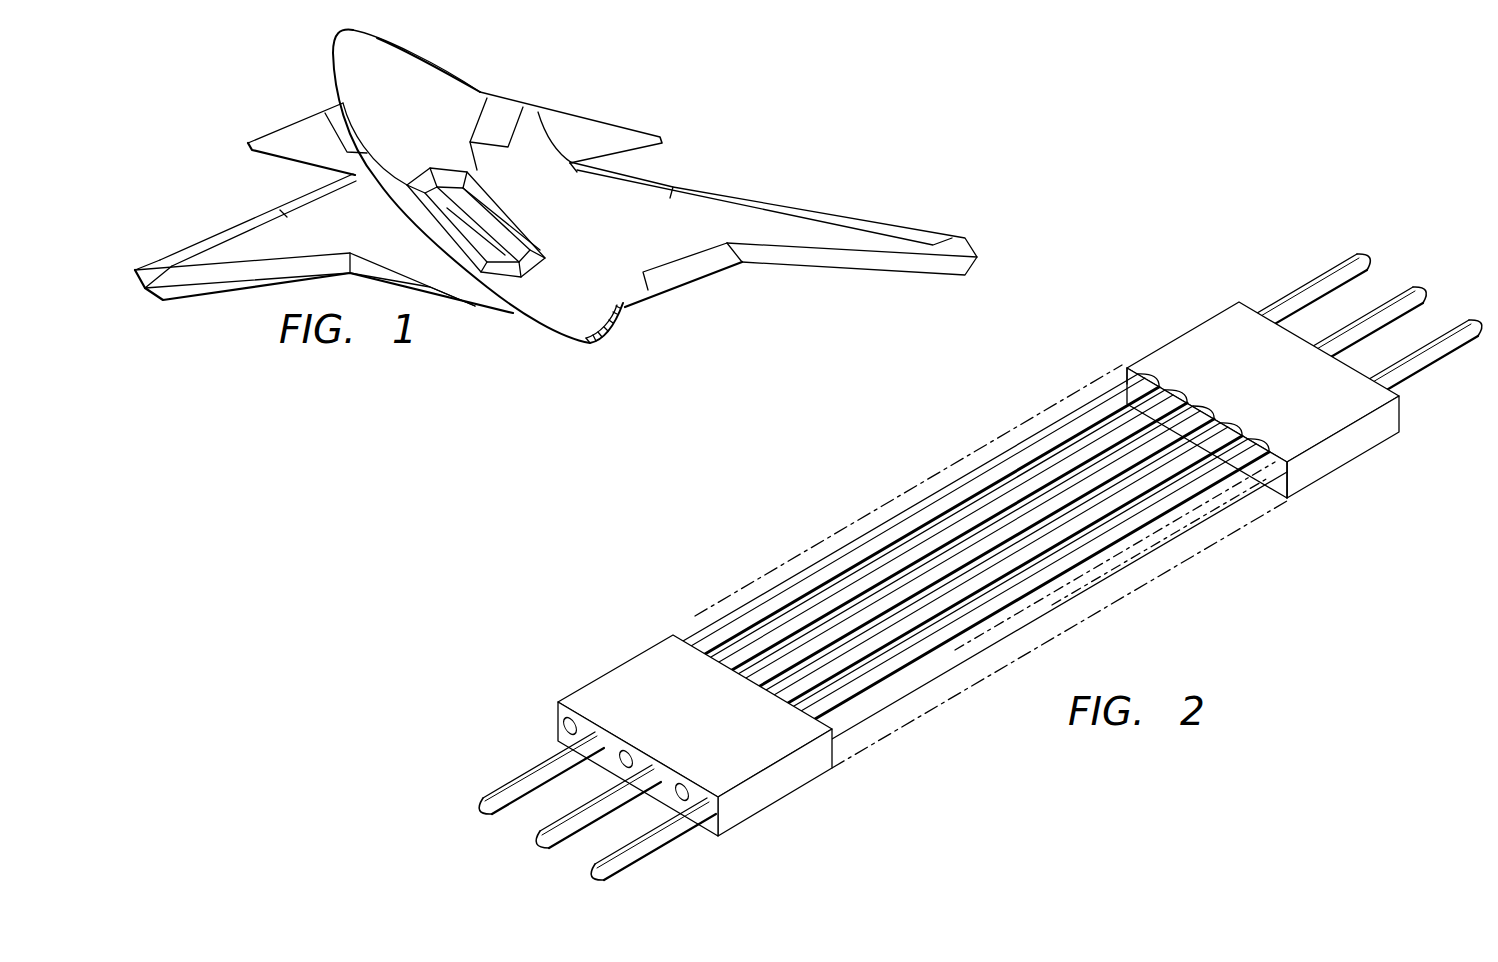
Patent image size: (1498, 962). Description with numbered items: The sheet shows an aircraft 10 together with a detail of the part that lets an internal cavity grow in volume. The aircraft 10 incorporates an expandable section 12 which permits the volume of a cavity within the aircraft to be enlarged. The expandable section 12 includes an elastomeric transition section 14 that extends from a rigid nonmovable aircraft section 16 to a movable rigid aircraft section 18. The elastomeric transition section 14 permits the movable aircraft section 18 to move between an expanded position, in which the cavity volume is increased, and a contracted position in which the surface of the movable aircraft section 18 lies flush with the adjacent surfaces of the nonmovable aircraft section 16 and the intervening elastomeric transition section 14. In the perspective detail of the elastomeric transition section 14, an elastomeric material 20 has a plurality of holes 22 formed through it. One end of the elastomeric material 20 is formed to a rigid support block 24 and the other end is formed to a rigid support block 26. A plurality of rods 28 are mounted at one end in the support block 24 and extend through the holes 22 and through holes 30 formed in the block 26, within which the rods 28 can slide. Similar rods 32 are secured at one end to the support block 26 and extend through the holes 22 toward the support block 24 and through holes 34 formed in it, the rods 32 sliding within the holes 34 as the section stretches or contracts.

In FIG. 1, the aircraft 10 is at (739, 152).
In FIG. 1, the expandable section 12 is at (466, 206).
In FIG. 1, the elastomeric transition section 14 is at (530, 248).
In FIG. 2, the elastomeric transition section 14 is at (958, 434).
In FIG. 1, the rigid nonmovable aircraft section 16 is at (443, 160).
In FIG. 1, the movable rigid aircraft section 18 is at (497, 270).
In FIG. 2, the elastomeric material 20 is at (1262, 505).
In FIG. 2, the holes 22 is at (1190, 542).
In FIG. 2, the rigid support block 24 is at (659, 679).
In FIG. 2, the rigid support block 26 is at (1225, 340).
In FIG. 2, the rods 28 is at (823, 637).
In FIG. 2, the holes 30 is at (1138, 368).
In FIG. 2, the rods 32 is at (1163, 403).
In FIG. 2, the holes 34 is at (598, 723).